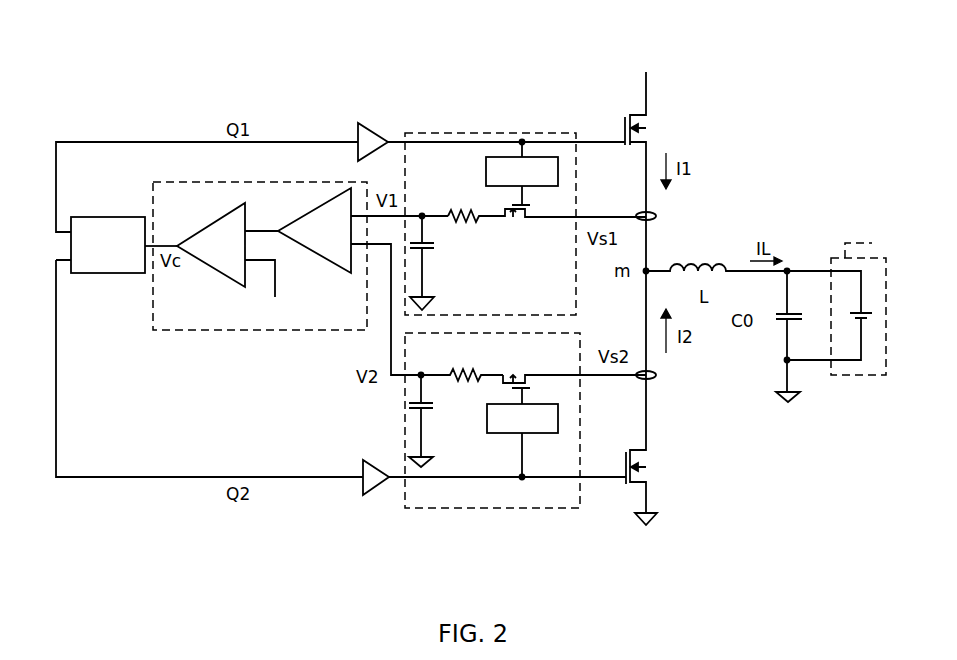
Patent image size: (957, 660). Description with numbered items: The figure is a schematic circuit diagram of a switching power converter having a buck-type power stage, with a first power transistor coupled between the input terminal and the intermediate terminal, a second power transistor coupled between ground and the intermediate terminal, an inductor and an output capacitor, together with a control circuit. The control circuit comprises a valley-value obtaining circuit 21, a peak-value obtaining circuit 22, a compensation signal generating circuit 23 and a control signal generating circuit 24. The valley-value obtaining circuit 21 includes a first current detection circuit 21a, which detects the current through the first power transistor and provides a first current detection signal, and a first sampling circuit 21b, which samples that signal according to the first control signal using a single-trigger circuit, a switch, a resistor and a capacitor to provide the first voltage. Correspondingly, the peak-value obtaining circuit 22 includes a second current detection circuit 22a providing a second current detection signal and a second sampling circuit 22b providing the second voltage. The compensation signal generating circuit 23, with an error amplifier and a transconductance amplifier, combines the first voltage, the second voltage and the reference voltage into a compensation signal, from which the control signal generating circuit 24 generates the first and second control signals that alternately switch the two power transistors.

The valley-value obtaining circuit 21 is at (532, 67).
The first current detection circuit 21a is at (643, 213).
The first sampling circuit 21b is at (475, 133).
The peak-value obtaining circuit 22 is at (797, 440).
The second current detection circuit 22a is at (650, 378).
The second sampling circuit 22b is at (558, 508).
The compensation signal generating circuit 23 is at (287, 330).
The control signal generating circuit 24 is at (124, 245).